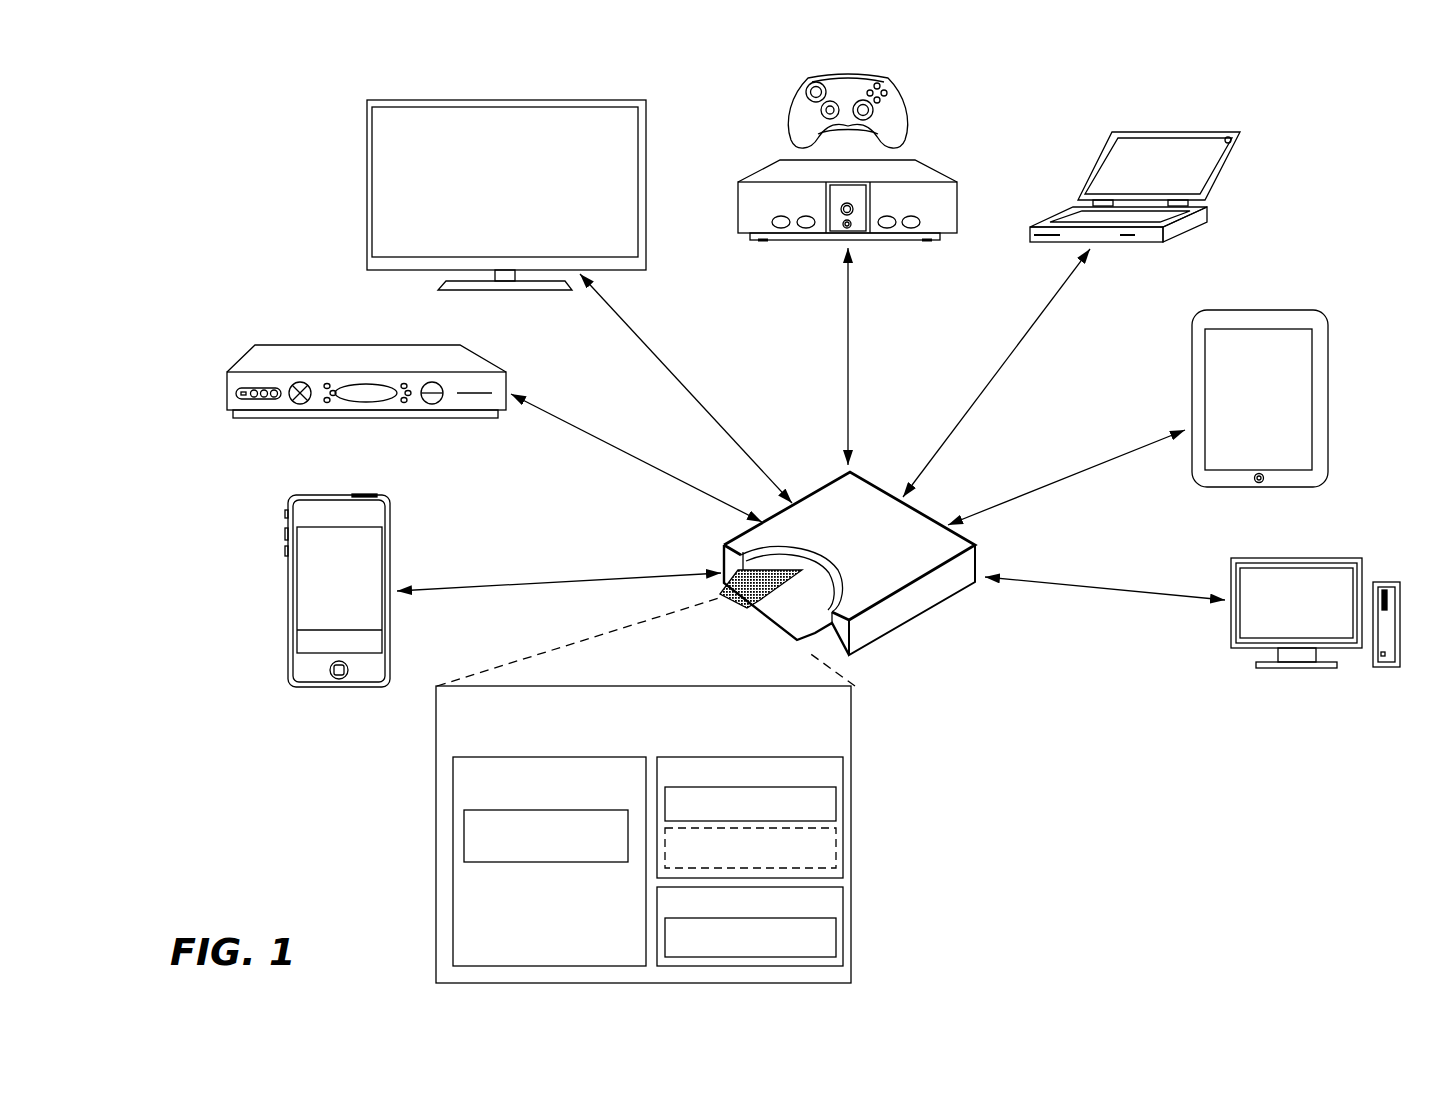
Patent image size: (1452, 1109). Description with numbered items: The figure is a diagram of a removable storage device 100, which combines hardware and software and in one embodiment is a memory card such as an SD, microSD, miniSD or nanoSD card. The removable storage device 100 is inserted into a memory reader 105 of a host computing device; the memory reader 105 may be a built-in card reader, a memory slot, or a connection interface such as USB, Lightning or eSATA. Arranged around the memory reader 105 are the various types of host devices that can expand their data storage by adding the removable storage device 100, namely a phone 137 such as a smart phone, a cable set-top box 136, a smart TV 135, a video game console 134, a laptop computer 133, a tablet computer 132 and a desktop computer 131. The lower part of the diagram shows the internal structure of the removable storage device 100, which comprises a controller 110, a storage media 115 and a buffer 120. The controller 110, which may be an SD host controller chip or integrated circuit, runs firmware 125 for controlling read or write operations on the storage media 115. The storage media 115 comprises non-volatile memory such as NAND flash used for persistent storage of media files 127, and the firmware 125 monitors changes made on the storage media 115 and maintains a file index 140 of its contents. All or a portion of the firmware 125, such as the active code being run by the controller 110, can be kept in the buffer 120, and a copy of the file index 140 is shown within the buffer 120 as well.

The removable storage device 100 is at (403, 880).
The memory reader 105 is at (918, 620).
The controller 110 is at (465, 757).
The storage media 115 is at (823, 757).
The buffer 120 is at (845, 900).
The firmware 125 is at (464, 836).
The media files 127 is at (816, 813).
The desktop computer 131 is at (1335, 558).
The tablet computer 132 is at (1260, 310).
The laptop computer 133 is at (1177, 132).
The video game console 134 is at (931, 182).
The smart TV 135 is at (516, 100).
The cable set-top box 136 is at (367, 345).
The phone 137 is at (340, 495).
The file index 140 is at (816, 857).